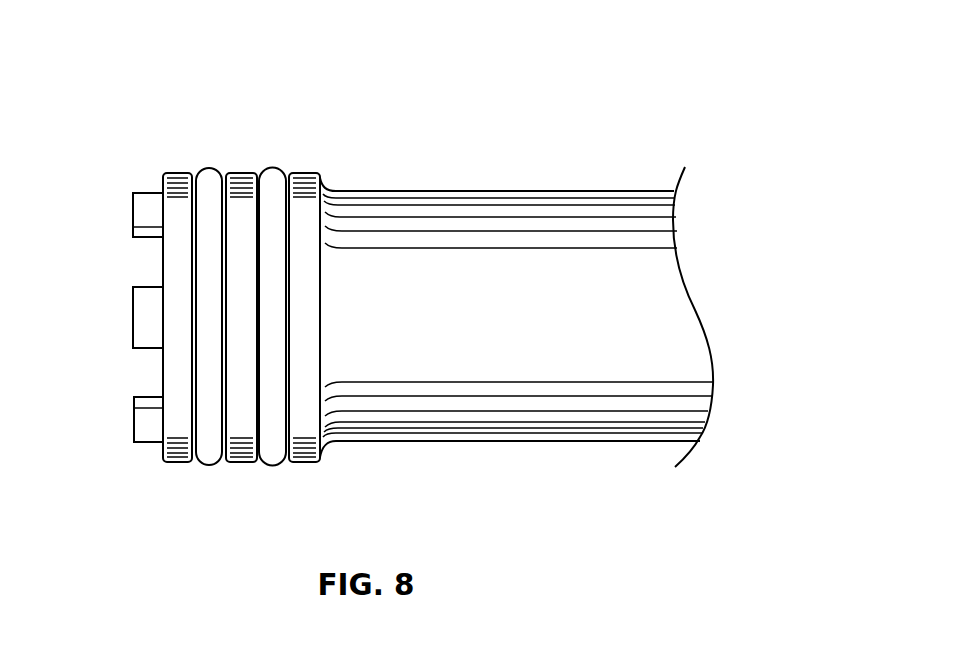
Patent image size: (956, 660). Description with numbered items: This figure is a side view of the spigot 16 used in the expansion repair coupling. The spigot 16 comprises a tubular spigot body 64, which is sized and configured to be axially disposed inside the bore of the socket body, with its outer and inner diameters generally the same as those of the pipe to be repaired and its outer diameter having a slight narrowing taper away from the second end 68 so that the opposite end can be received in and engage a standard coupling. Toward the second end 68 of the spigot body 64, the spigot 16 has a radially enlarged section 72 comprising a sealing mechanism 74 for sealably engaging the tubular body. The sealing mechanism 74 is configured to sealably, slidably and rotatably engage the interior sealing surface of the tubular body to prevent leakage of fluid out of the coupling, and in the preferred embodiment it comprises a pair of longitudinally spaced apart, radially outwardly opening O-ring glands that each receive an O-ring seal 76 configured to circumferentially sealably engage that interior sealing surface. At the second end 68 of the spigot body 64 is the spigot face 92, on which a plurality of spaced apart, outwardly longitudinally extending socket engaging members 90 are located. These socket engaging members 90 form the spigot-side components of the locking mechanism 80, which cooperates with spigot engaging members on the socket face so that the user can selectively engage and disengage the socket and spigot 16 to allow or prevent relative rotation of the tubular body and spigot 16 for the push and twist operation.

The spigot 16 is at (593, 190).
The spigot body 64 is at (502, 277).
The second end 68 is at (178, 470).
The radially enlarged section 72 is at (275, 152).
The sealing mechanism 74 is at (265, 472).
The O-ring seal 76 is at (209, 193).
The locking mechanism 80 is at (142, 448).
The socket engaging member 90 is at (152, 215).
The spigot face 92 is at (163, 258).